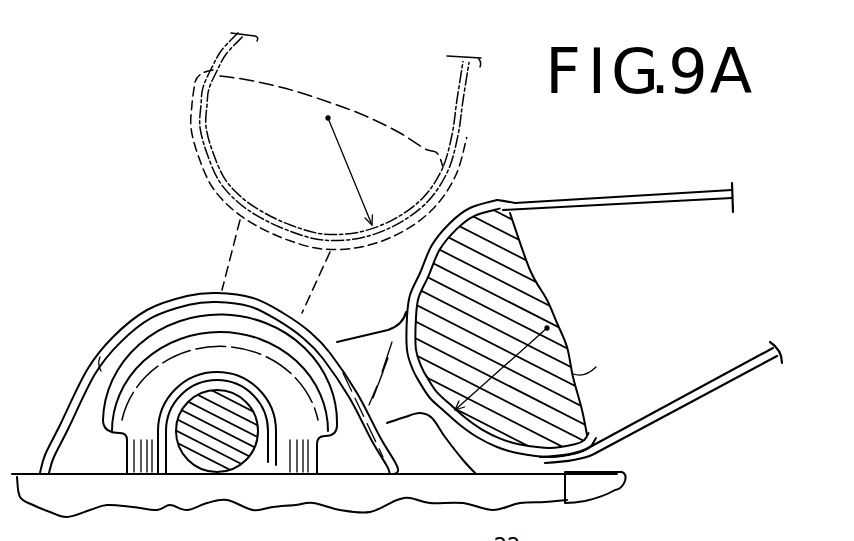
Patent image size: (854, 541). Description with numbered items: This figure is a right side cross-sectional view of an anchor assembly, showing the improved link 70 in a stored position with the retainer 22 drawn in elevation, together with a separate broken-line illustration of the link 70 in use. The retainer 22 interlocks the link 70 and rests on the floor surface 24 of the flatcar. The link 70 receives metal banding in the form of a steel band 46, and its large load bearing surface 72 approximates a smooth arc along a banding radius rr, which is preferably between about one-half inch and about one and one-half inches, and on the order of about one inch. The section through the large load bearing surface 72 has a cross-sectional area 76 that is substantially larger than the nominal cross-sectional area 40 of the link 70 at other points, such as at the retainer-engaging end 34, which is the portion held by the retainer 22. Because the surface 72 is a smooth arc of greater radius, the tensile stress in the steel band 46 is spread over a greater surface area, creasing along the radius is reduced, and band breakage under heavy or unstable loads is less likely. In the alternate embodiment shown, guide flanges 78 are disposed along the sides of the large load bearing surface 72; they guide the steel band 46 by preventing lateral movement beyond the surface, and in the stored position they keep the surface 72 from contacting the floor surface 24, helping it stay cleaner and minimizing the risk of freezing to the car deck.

The retainer 22 is at (97, 458).
The floor surface 24 is at (98, 498).
The retainer-engaging end 34 is at (182, 462).
The nominal cross-sectional area 40 is at (226, 477).
The steel band 46 is at (469, 83).
The improved link 70 is at (432, 447).
The large load bearing surface 72 is at (226, 171).
The cross-sectional area 76 is at (534, 270).
The guide flanges 78 is at (197, 137).